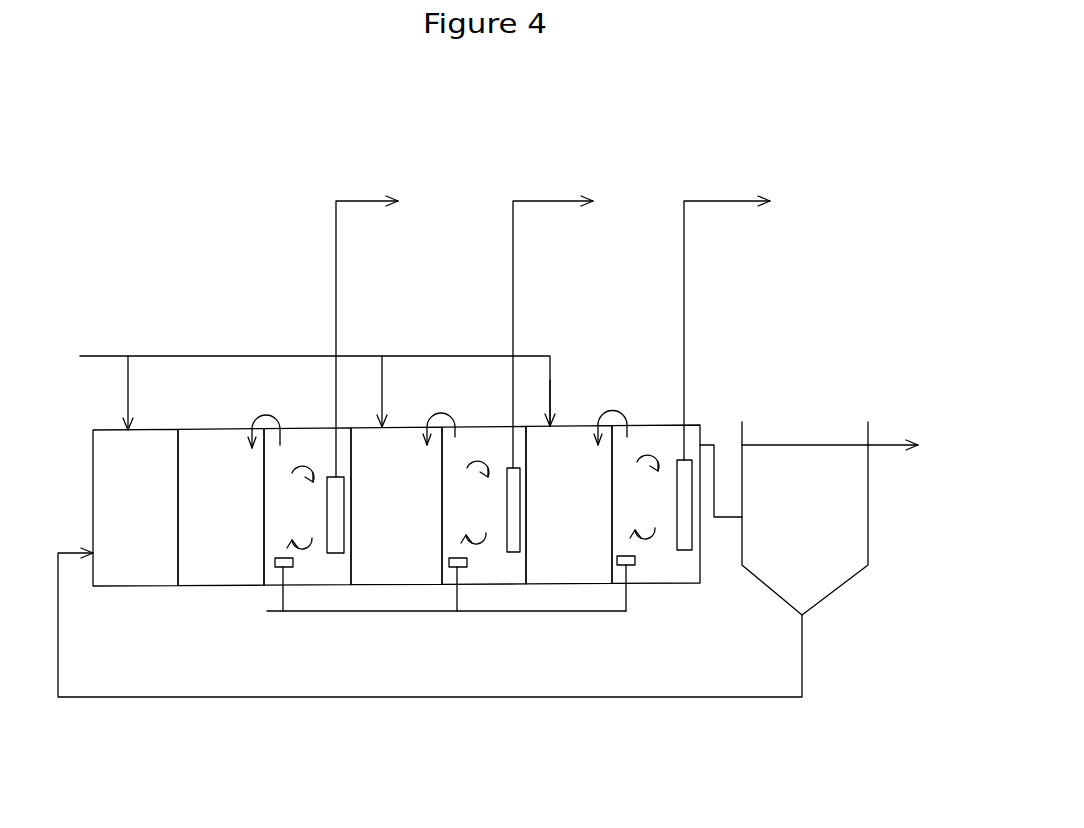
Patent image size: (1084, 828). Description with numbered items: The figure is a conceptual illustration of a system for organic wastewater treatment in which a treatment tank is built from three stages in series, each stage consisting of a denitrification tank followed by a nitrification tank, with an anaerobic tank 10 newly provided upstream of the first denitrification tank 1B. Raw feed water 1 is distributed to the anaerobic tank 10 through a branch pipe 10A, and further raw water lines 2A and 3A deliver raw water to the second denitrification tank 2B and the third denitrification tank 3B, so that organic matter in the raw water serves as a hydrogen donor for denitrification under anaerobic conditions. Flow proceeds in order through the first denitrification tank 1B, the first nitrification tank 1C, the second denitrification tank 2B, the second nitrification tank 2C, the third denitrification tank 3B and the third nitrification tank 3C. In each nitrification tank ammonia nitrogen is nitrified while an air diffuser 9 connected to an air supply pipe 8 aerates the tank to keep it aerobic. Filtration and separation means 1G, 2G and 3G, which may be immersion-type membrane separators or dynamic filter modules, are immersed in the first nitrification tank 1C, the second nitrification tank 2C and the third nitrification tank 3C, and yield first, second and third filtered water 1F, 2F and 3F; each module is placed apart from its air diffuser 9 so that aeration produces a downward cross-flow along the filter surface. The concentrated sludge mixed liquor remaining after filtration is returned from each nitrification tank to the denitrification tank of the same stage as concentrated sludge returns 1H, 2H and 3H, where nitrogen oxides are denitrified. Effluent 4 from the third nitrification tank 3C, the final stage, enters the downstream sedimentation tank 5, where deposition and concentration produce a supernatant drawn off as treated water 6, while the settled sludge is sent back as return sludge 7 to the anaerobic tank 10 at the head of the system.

The raw feed water 1 is at (100, 354).
The branch pipe 10A is at (128, 393).
The raw water line 2A is at (383, 402).
The raw water line 3A is at (553, 398).
The anaerobic tank 10 is at (133, 587).
The first denitrification tank 1B is at (203, 587).
The first nitrification tank 1C is at (326, 587).
The second denitrification tank 2B is at (401, 587).
The second nitrification tank 2C is at (499, 584).
The third denitrification tank 3B is at (568, 584).
The third nitrification tank 3C is at (668, 584).
The concentrated sludge return 1H is at (281, 428).
The concentrated sludge return 2H is at (447, 413).
The concentrated sludge return 3H is at (613, 413).
The filtration and separation means 1G is at (327, 500).
The filtration and separation means 2G is at (507, 495).
The filtration and separation means 3G is at (677, 492).
The first filtered water 1F is at (367, 200).
The second filtered water 2F is at (562, 200).
The third filtered water 3F is at (737, 200).
The air diffuser 9 is at (280, 557).
The air supply pipe 8 is at (438, 615).
The effluent 4 is at (703, 443).
The sedimentation tank 5 is at (868, 537).
The treated water 6 is at (890, 444).
The return sludge 7 is at (707, 698).